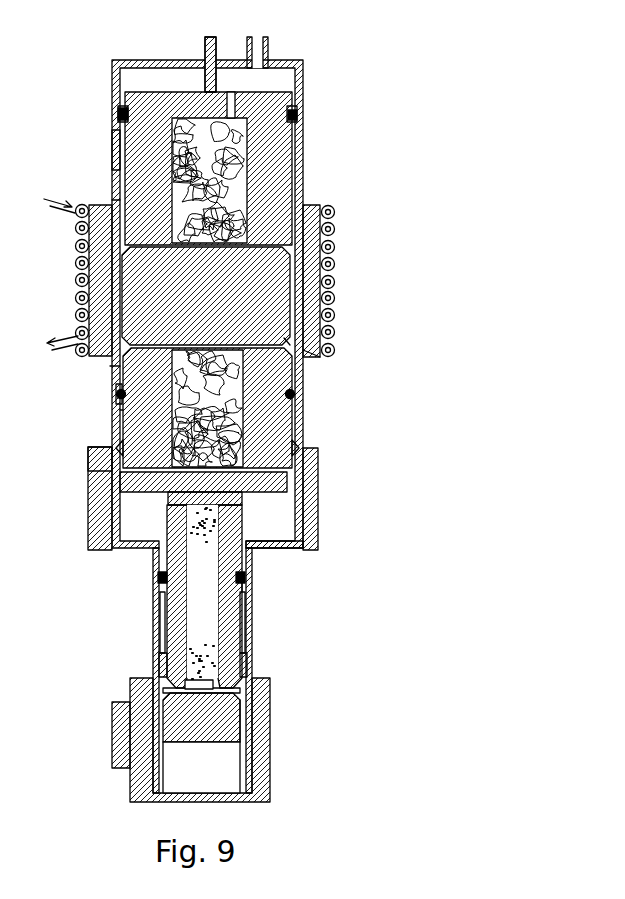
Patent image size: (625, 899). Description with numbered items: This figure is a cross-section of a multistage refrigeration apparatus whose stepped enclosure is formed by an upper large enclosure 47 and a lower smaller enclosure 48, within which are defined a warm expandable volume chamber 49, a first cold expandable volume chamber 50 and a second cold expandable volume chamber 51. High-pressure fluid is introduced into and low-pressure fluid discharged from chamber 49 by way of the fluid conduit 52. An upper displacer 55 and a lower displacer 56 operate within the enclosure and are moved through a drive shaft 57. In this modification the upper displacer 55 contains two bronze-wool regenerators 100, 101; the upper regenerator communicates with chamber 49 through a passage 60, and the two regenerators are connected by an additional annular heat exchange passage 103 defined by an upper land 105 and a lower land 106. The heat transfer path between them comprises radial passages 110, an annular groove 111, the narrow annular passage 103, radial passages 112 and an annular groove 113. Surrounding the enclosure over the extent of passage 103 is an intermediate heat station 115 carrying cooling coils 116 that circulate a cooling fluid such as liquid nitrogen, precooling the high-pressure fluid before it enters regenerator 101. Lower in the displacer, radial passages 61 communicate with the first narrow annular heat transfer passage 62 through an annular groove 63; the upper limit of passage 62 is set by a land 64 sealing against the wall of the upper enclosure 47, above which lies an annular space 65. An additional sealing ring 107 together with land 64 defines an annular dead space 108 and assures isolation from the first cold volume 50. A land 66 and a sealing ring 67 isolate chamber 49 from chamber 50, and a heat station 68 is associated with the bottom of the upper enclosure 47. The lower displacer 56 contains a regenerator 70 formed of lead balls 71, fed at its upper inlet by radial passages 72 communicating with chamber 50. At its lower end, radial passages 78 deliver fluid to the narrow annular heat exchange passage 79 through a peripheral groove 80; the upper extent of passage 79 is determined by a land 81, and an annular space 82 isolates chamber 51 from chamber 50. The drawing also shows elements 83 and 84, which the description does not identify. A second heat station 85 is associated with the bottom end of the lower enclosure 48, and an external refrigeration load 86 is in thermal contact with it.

The upper large enclosure 47 is at (292, 394).
The lower smaller enclosure 48 is at (252, 610).
The warm expandable volume chamber 49 is at (287, 84).
The first cold expandable volume chamber 50 is at (280, 529).
The second cold expandable volume chamber 51 is at (210, 781).
The fluid conduit 52 is at (258, 46).
The upper displacer 55 is at (237, 141).
The lower displacer 56 is at (165, 618).
The drive shaft 57 is at (212, 37).
The passage 60 is at (231, 100).
The radial passages 61 is at (290, 480).
The first narrow annular heat transfer passage 62 is at (90, 486).
The annular groove 63 is at (108, 468).
The land 64 is at (297, 442).
The annular space 65 is at (120, 147).
The land 66 is at (296, 108).
The sealing ring 67 is at (300, 115).
The heat station 68 is at (310, 541).
The regenerator 70 is at (212, 603).
The lead balls 71 is at (158, 576).
The radial passages 72 is at (303, 502).
The radial passages 78 is at (233, 703).
The narrow annular heat exchange passage 79 is at (240, 736).
The peripheral groove 80 is at (240, 688).
The land 81 is at (247, 655).
The annular space 82 is at (245, 632).
The groove 83 is at (243, 590).
The seal 84 is at (245, 576).
The second heat station 85 is at (265, 786).
The external refrigeration load 86 is at (120, 720).
The regenerator 100 is at (230, 152).
The regenerator 101 is at (214, 432).
The annular heat exchange passage 103 is at (290, 282).
The upper land 105 is at (116, 205).
The lower land 106 is at (110, 372).
The sealing ring 107 is at (120, 394).
The annular dead space 108 is at (112, 424).
The radial passages 110 is at (128, 250).
The annular groove 111 is at (128, 246).
The radial passages 112 is at (284, 341).
The annular groove 113 is at (318, 356).
The intermediate heat station 115 is at (312, 240).
The cooling coils 116 is at (334, 226).